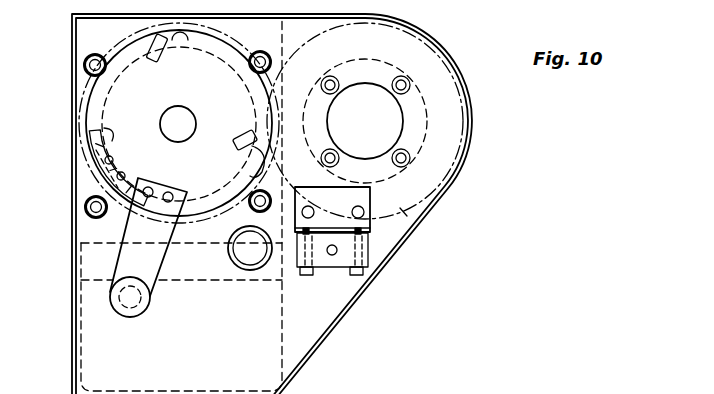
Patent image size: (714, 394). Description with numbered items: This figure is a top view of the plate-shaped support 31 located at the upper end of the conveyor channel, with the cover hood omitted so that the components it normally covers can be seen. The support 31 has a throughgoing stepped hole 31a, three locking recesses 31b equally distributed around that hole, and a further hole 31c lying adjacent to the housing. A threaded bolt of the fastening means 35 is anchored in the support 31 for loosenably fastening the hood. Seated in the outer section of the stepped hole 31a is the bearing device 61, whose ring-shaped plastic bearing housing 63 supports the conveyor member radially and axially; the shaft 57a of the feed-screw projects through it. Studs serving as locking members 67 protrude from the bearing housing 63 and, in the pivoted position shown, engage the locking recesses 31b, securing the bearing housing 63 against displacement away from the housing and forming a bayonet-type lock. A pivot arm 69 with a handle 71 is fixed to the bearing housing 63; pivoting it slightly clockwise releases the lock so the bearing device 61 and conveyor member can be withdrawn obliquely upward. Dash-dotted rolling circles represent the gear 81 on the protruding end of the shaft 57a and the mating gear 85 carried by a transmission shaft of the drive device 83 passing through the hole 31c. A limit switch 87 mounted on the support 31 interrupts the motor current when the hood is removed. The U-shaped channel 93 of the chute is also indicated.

The support 31 is at (428, 63).
The stepped hole 31a is at (108, 134).
The locking recesses 31b is at (108, 143).
The further hole 31c is at (403, 123).
The fastening means 35 is at (245, 267).
The shaft 57a is at (170, 118).
The bearing device 61 is at (104, 101).
The bearing housing 63 is at (107, 167).
The locking members 67 is at (240, 133).
The pivot arm 69 is at (122, 260).
The handle 71 is at (113, 304).
The gear 81 is at (113, 51).
The drive device 83 is at (424, 150).
The gear 85 is at (406, 215).
The limit switch 87 is at (333, 270).
The channel 93 is at (290, 322).